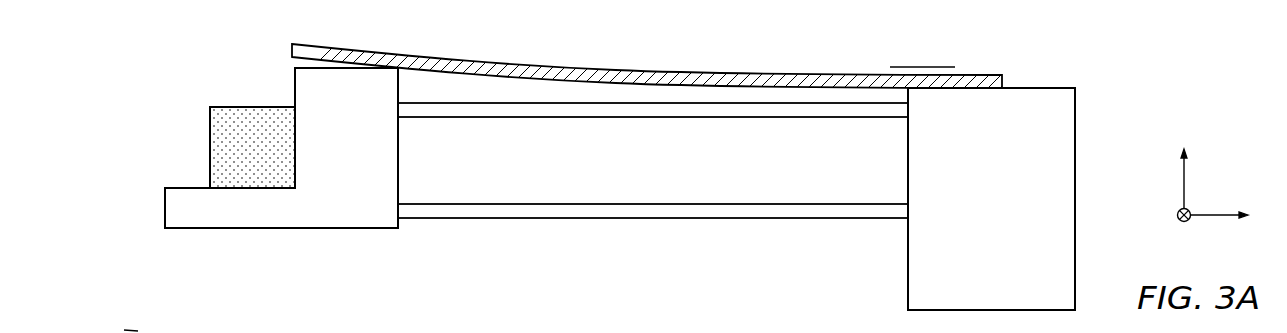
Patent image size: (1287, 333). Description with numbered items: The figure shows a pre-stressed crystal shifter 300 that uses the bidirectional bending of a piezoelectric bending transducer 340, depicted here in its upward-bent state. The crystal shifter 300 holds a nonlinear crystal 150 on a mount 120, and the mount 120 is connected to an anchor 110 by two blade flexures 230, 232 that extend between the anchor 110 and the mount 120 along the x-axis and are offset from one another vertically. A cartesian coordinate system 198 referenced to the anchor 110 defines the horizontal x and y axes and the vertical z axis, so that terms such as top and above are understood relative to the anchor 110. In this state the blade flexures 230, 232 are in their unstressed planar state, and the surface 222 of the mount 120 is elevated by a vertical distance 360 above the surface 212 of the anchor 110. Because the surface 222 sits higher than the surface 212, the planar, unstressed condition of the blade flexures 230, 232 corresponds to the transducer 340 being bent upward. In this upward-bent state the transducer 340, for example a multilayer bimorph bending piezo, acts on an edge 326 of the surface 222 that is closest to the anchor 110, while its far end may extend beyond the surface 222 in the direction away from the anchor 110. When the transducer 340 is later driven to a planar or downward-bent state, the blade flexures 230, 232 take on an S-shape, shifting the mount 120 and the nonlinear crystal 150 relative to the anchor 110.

The pre-stressed crystal shifter 300 is at (190, 55).
The anchor 110 is at (1007, 218).
The mount 120 is at (357, 213).
The nonlinear crystal 150 is at (267, 162).
The surface of mount 222 is at (339, 64).
The surface of anchor 212 is at (1020, 87).
The blade flexure 230 is at (715, 203).
The blade flexure 232 is at (715, 118).
The edge of surface 326 is at (391, 74).
The piezoelectric bending transducer 340 is at (575, 65).
The vertical distance 360 is at (928, 112).
The cartesian coordinate system 198 is at (1172, 171).